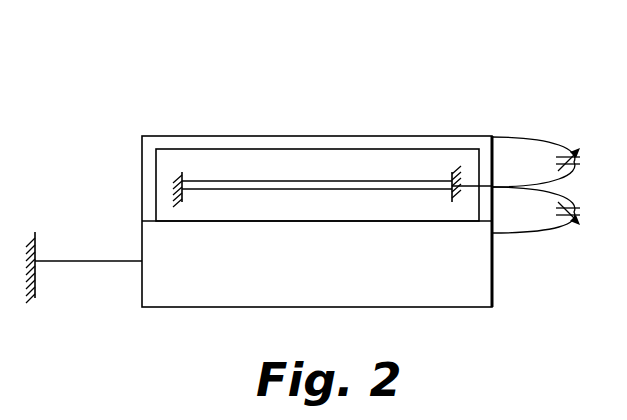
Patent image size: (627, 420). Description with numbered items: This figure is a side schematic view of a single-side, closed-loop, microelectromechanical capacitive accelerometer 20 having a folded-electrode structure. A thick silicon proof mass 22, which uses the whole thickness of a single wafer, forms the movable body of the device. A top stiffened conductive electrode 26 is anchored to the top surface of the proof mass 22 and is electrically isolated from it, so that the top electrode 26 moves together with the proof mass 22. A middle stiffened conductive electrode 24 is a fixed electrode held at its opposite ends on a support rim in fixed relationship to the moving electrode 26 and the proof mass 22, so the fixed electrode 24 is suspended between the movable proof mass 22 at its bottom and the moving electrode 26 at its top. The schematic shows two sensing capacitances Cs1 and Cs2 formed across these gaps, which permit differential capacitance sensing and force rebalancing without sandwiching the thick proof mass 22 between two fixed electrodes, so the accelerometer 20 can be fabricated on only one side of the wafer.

The accelerometer 20 is at (321, 165).
The proof mass 22 is at (493, 282).
The middle stiffened conductive electrode 24 is at (428, 174).
The top stiffened conductive electrode 26 is at (220, 135).
The first sensing capacitor Cs1 is at (554, 162).
The second sensing capacitor Cs2 is at (554, 210).